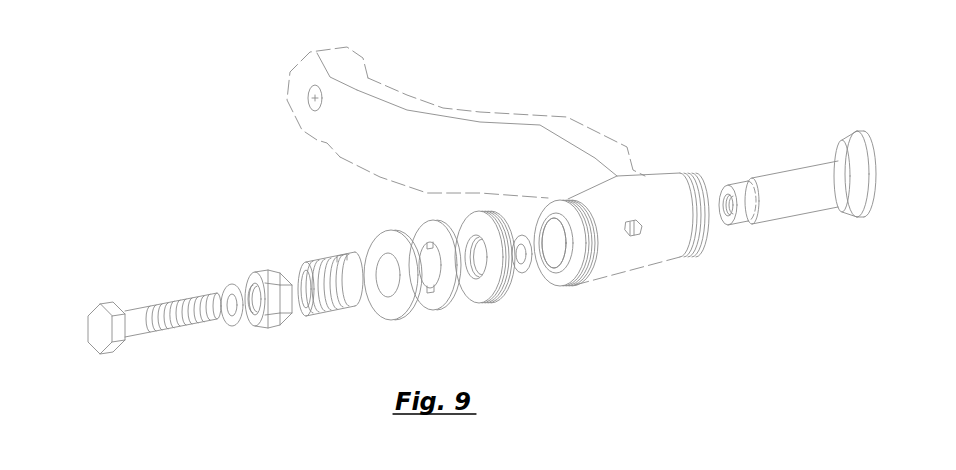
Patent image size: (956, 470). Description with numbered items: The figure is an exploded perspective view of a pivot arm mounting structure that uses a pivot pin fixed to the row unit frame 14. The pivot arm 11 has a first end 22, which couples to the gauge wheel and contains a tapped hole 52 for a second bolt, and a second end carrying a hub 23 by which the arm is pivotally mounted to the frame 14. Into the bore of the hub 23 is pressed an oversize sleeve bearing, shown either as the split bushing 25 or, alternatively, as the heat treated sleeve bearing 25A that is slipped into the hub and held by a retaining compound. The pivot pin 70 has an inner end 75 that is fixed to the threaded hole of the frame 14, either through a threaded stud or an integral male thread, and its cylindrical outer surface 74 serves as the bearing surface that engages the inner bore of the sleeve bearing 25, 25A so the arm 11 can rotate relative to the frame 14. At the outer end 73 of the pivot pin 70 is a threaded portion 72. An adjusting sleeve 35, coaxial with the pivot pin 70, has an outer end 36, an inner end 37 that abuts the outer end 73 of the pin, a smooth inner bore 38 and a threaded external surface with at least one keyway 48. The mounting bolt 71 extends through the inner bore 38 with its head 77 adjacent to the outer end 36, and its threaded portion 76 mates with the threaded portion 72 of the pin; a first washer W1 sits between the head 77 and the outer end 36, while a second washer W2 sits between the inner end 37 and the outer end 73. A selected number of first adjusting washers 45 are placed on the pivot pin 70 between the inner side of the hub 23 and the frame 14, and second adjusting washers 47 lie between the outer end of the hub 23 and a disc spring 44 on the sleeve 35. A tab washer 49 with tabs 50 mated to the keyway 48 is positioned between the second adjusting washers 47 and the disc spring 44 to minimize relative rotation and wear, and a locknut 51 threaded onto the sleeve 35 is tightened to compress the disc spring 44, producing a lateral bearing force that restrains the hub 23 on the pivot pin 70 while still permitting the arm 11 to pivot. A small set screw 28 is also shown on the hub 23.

The pivot arm 11 is at (497, 112).
The first end 22 is at (308, 63).
The tapped hole 52 is at (311, 104).
The mounting bolt 71 is at (162, 331).
The head 77 is at (103, 307).
The threaded portion 76 is at (190, 322).
The first washer W1 is at (224, 290).
The nut 51 is at (264, 274).
The adjusting sleeve 35 is at (334, 297).
The outer end 36 is at (302, 278).
The inner end 37 is at (357, 302).
The inner bore 38 is at (306, 298).
The keyway 48 is at (341, 261).
The disc spring 44 is at (400, 310).
The tab washer 49 is at (447, 291).
The tab 50 is at (432, 290).
The second adjusting washers 47 is at (487, 299).
The second washer W2 is at (523, 279).
The split bushing 25 is at (560, 275).
The sleeve bearing 25A is at (554, 243).
The hub 23 is at (626, 250).
The first adjusting washers 45 is at (690, 173).
The set screw 28 is at (633, 236).
The outer end 73 is at (740, 216).
The threaded portion 72 is at (731, 210).
The pivot pin 70 is at (823, 192).
The outer surface 74 is at (792, 164).
The inner end 75 is at (838, 158).
The frame 14 is at (866, 166).